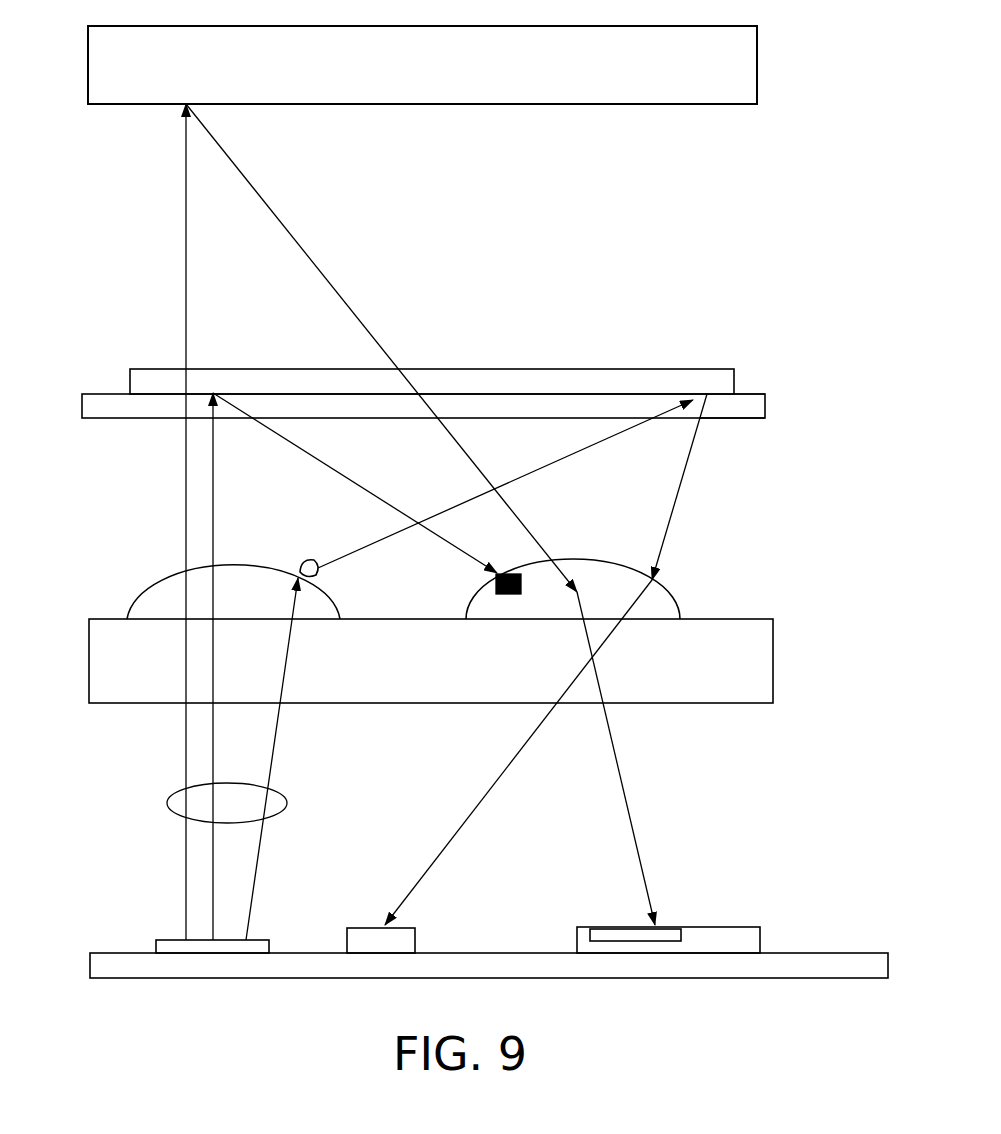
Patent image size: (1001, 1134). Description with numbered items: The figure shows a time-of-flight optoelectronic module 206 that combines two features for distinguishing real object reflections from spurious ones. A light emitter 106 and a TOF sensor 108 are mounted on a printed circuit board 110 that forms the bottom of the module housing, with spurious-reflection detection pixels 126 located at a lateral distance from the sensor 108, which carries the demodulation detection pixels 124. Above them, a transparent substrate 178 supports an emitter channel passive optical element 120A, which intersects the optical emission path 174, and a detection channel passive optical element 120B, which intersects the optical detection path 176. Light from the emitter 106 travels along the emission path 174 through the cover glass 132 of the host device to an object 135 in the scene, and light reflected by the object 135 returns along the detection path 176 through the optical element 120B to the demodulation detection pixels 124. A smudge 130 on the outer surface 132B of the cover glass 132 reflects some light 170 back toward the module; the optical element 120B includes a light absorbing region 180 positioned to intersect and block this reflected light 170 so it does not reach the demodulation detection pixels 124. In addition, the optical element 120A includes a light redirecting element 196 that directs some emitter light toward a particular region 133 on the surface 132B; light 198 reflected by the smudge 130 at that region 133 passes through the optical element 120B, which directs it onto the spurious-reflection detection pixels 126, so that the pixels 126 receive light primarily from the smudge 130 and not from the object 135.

The object 135 is at (88, 62).
The module 206 is at (748, 303).
The smudge 130 is at (130, 372).
The cover glass 132 is at (82, 410).
The outer surface of the cover glass 132B is at (757, 393).
The particular region 133 is at (713, 398).
The transparent substrate 178 is at (88, 643).
The passive optical element 120A is at (140, 587).
The passive optical element 120B is at (680, 603).
The light redirecting element 196 is at (303, 560).
The light absorbing region 180 is at (503, 594).
The optical emission path 174 is at (287, 798).
The printed circuit board 110 is at (115, 972).
The light emitter 106 is at (156, 950).
The spurious-reflection detection pixels 126 is at (415, 930).
The TOF sensor 108 is at (732, 932).
The demodulation detection pixels 124 is at (645, 939).
The light reflected by the smudge 170 is at (358, 486).
The optical detection path 176 is at (627, 799).
The light reflected by the smudge at the particular region 198 is at (680, 502).